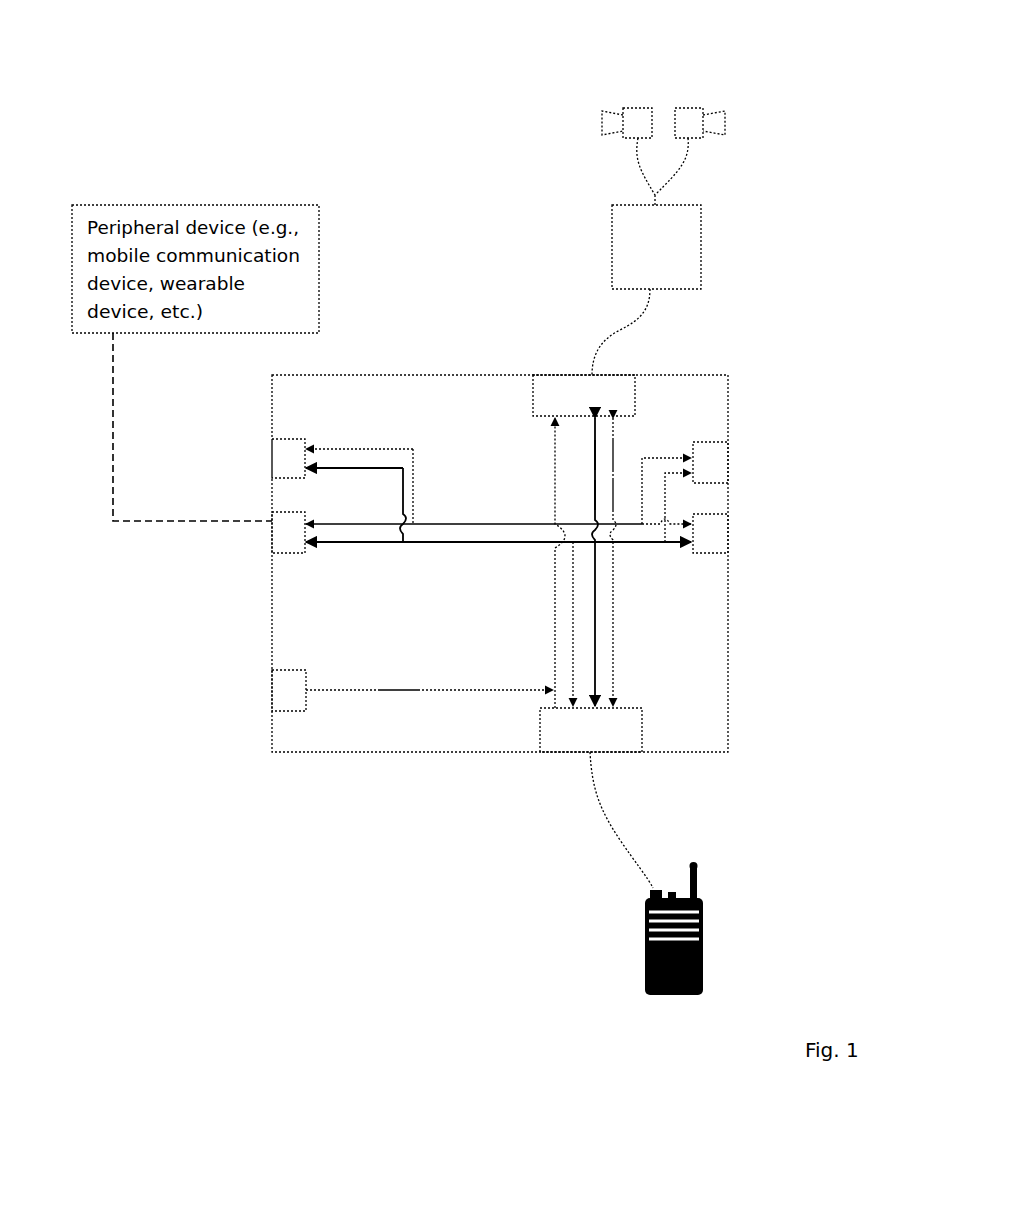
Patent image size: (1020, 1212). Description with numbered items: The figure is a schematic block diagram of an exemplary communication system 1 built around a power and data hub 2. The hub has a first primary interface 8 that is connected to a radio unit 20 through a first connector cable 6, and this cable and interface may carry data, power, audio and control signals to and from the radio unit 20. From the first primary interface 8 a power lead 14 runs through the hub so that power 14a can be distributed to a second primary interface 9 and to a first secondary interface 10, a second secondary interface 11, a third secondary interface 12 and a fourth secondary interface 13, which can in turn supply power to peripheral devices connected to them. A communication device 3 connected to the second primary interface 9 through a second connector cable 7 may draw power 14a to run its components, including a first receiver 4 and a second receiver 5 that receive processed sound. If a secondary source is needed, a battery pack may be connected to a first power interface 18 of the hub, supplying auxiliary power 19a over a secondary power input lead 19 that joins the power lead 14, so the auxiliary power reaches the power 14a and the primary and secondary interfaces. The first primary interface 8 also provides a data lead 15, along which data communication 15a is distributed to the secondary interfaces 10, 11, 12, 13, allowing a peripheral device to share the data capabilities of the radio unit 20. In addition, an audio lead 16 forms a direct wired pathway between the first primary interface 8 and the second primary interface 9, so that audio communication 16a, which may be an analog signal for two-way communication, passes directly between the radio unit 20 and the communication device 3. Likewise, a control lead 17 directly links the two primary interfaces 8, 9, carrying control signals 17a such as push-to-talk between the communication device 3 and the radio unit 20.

The communication system 1 is at (325, 95).
The power and data hub 2 is at (285, 755).
The communication device 3 is at (612, 243).
The first receiver 4 is at (635, 108).
The second receiver 5 is at (690, 108).
The first connector cable 6 is at (610, 800).
The second connector cable 7 is at (630, 328).
The first primary interface 8 is at (632, 752).
The second primary interface 9 is at (548, 380).
The first secondary interface 10 is at (272, 530).
The second secondary interface 11 is at (272, 450).
The third secondary interface 12 is at (728, 540).
The fourth secondary interface 13 is at (728, 465).
The power lead 14 is at (555, 645).
The power 14a is at (560, 622).
The data lead 15 is at (560, 598).
The data communication 15a is at (572, 575).
The audio lead 16 is at (600, 665).
The audio communication 16a is at (600, 687).
The control lead 17 is at (613, 632).
The control signals 17a is at (613, 607).
The first power interface 18 is at (272, 690).
The secondary power input lead 19 is at (357, 690).
The auxiliary power 19a is at (397, 690).
The radio unit 20 is at (645, 940).